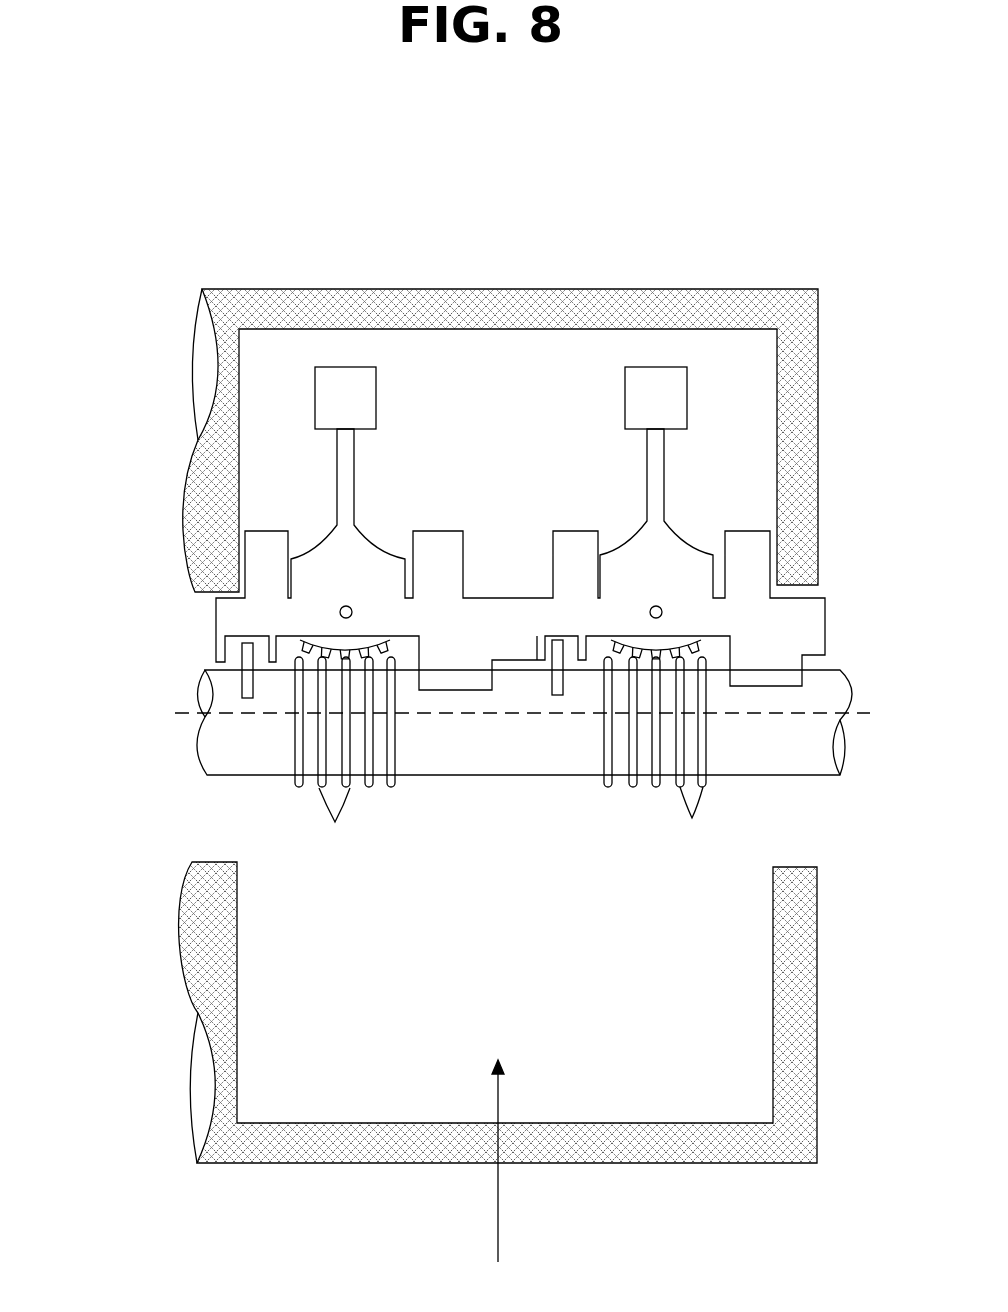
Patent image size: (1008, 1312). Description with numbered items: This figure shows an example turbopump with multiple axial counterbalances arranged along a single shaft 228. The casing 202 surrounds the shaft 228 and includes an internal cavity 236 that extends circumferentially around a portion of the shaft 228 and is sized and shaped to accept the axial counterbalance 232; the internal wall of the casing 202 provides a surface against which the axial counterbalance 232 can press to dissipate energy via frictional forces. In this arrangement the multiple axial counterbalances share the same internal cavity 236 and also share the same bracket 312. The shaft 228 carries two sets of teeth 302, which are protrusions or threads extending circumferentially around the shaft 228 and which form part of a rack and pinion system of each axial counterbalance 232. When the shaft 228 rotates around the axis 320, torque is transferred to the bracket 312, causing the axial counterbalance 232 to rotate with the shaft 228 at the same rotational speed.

The casing 202 is at (195, 483).
The axial counterbalance 232 is at (192, 615).
The bracket 312 is at (217, 637).
The shaft 228 is at (430, 774).
The axis 320 is at (178, 713).
The teeth 302 is at (504, 760).
The internal cavity 236 is at (498, 1161).